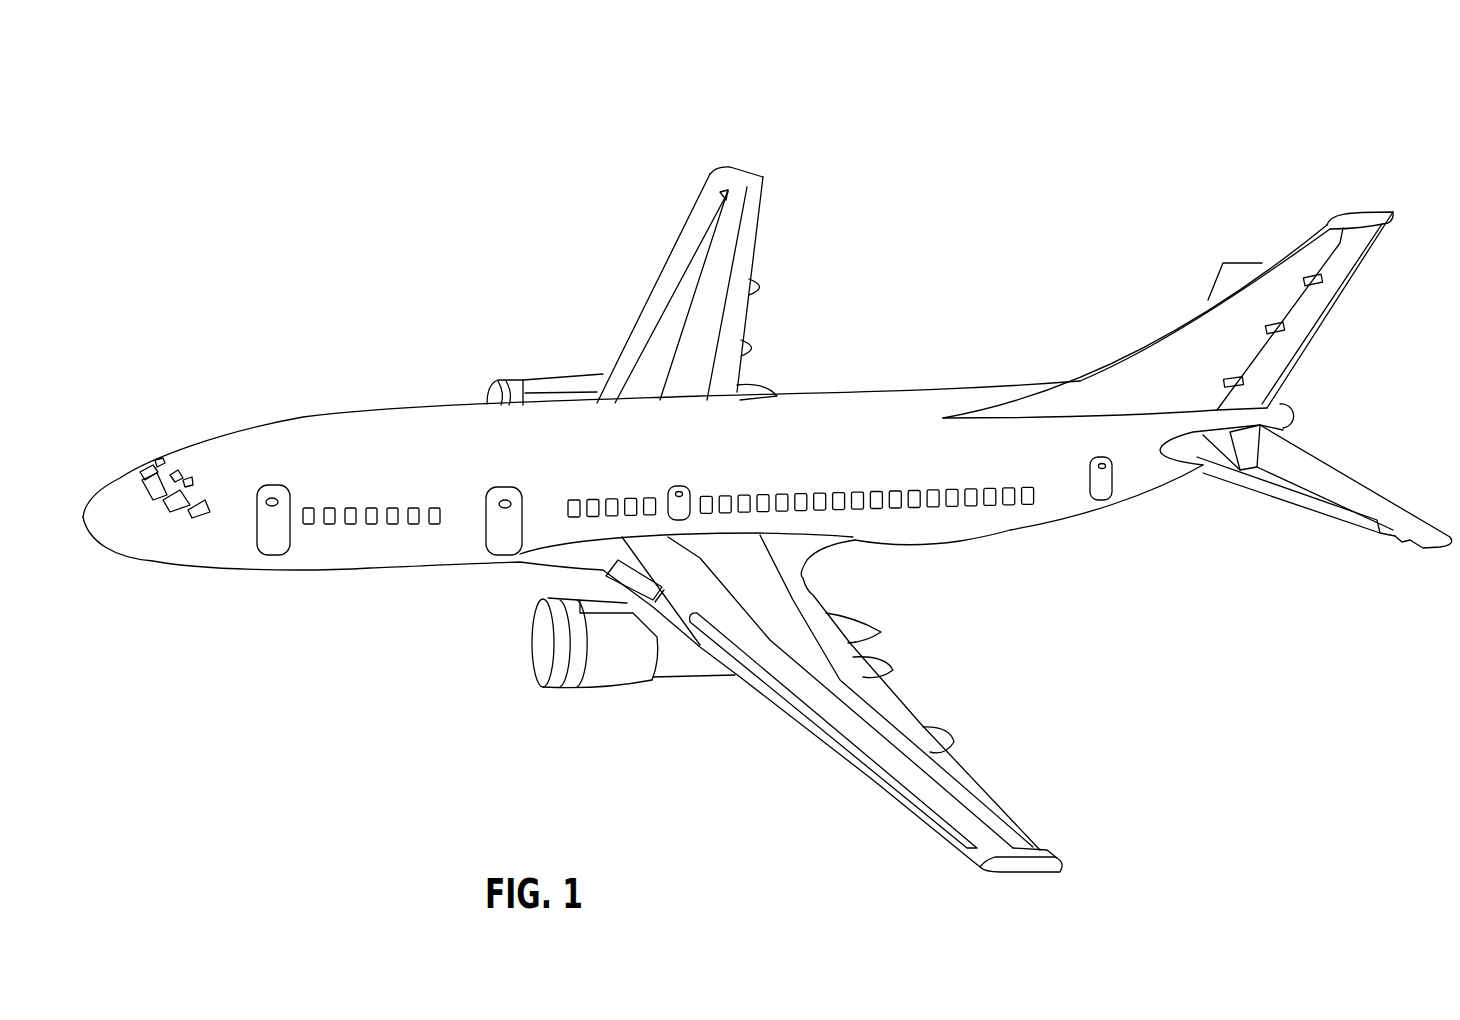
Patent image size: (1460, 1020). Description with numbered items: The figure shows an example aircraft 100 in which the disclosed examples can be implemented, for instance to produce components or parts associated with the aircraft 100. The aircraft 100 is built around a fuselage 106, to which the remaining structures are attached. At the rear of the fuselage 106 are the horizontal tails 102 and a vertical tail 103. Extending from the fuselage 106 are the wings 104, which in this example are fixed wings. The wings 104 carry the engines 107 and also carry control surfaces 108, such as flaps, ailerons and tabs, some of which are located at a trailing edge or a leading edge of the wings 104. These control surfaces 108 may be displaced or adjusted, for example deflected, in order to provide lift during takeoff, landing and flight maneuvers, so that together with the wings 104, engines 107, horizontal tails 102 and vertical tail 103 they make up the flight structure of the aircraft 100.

The aircraft 100 is at (285, 278).
The horizontal tails 102 is at (1238, 277).
The vertical tail 103 is at (1362, 227).
The wings 104 is at (633, 327).
The fuselage 106 is at (203, 468).
The engines 107 is at (523, 380).
The control surfaces 108 is at (742, 292).